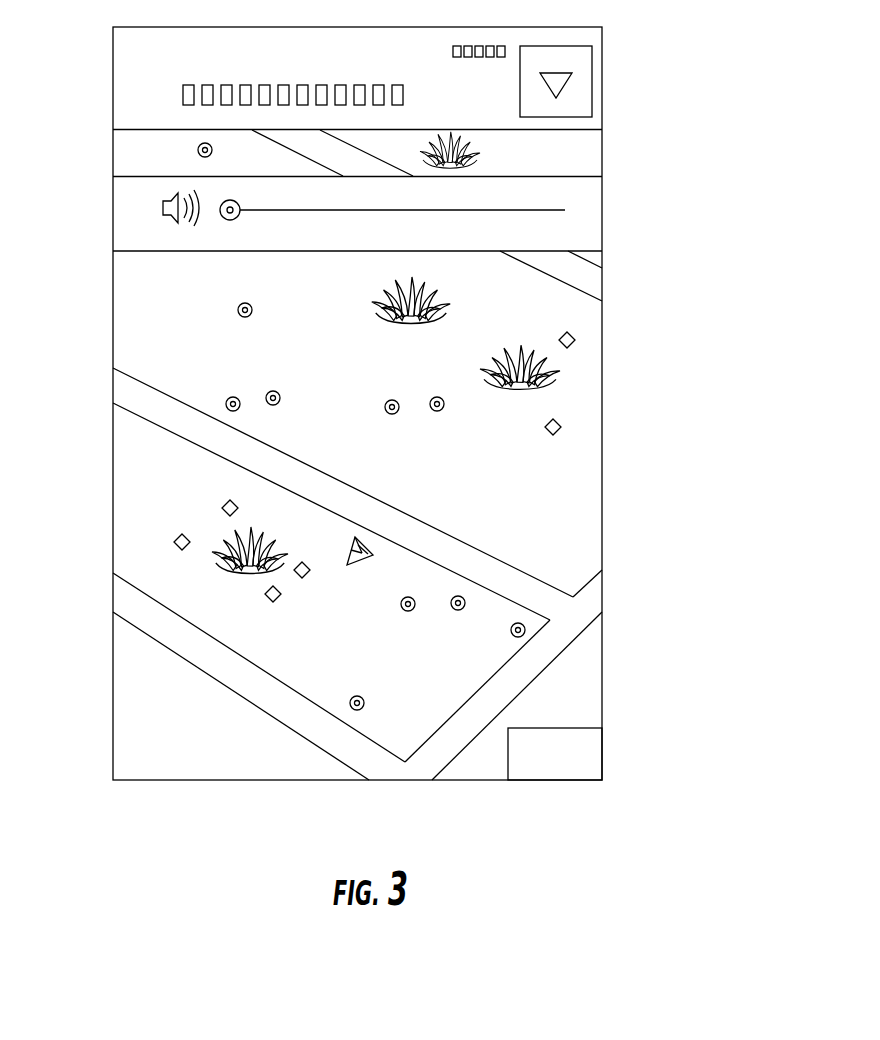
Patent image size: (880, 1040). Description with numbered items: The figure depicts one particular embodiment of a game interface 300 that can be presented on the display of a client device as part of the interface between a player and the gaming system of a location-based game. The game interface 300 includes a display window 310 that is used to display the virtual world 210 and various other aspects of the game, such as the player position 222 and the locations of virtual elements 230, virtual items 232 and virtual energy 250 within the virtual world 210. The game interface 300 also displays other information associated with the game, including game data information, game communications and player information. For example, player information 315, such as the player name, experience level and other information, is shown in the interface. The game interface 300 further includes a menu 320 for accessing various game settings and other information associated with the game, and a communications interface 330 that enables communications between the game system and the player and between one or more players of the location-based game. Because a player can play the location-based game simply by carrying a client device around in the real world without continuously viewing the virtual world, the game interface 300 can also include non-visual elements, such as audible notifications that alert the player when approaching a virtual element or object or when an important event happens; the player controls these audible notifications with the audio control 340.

The game interface 300 is at (700, 112).
The display window 310 is at (596, 158).
The player information 315 is at (120, 48).
The menu 320 is at (592, 80).
The communications interface 330 is at (598, 758).
The audio control 340 is at (120, 195).
The virtual world 210 is at (596, 487).
The player position 222 is at (348, 563).
The virtual elements 230 is at (378, 303).
The virtual items 232 is at (222, 506).
The virtual energy 250 is at (252, 312).